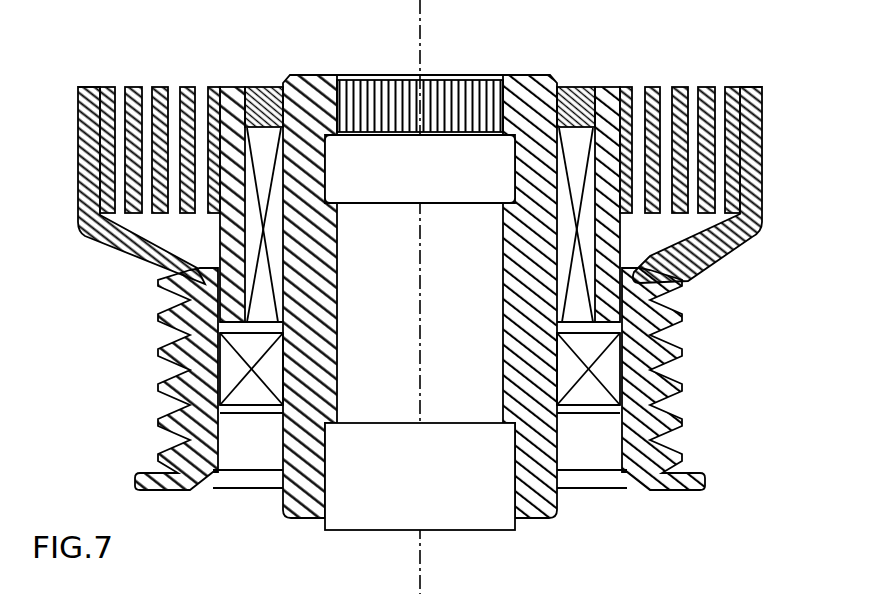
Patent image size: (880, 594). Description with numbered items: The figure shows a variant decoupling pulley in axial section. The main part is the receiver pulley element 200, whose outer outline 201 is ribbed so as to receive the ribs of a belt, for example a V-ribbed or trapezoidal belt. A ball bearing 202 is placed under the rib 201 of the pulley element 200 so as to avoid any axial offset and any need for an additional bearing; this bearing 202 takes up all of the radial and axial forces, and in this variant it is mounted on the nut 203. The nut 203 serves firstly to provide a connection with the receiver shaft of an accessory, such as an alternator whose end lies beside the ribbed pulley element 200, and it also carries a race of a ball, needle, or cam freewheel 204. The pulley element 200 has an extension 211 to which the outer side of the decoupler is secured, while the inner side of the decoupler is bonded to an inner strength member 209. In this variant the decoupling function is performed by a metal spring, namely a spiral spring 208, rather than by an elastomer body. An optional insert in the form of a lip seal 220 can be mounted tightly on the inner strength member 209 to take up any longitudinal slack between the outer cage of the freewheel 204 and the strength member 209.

The receiver pulley element 200 is at (167, 388).
The outer outline 201 is at (170, 348).
The ball bearing 202 is at (252, 397).
The nut 203 is at (543, 83).
The freewheel 204 is at (263, 289).
The spiral spring 208 is at (155, 87).
The inner strength member 209 is at (617, 187).
The extension 211 is at (78, 177).
The lip seal 220 is at (587, 87).